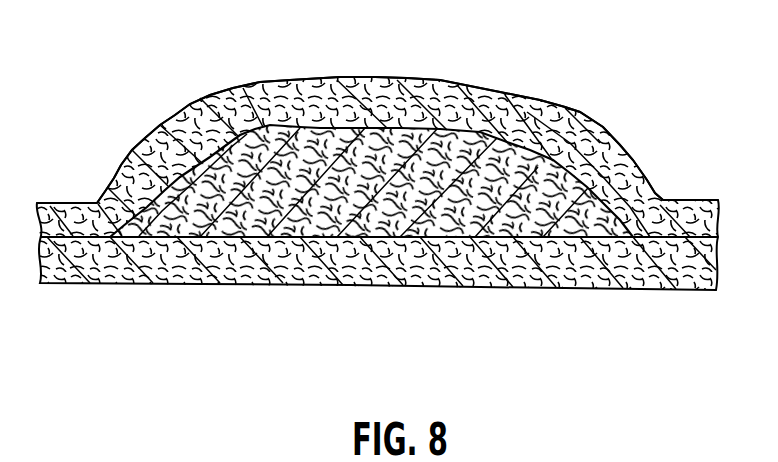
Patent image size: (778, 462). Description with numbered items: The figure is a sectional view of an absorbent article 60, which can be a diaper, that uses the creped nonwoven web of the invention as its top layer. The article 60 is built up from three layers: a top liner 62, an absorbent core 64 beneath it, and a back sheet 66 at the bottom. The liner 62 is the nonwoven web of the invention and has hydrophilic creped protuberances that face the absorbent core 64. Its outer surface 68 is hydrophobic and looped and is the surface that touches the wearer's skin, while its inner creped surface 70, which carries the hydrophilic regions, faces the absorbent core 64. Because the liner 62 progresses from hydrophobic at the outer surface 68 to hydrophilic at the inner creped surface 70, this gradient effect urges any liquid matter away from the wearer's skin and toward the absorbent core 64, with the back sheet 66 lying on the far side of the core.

The absorbent article 60 is at (660, 99).
The top liner 62 is at (541, 116).
The absorbent core 64 is at (328, 185).
The back sheet 66 is at (203, 253).
The outer surface 68 is at (407, 79).
The inner creped surface 70 is at (328, 128).